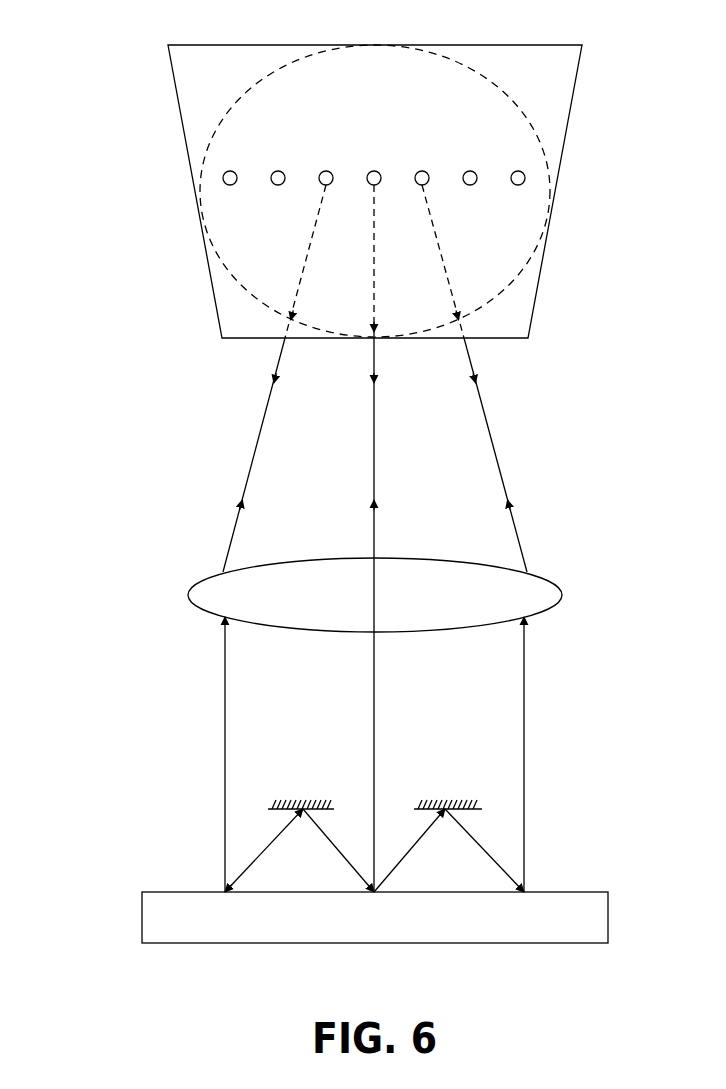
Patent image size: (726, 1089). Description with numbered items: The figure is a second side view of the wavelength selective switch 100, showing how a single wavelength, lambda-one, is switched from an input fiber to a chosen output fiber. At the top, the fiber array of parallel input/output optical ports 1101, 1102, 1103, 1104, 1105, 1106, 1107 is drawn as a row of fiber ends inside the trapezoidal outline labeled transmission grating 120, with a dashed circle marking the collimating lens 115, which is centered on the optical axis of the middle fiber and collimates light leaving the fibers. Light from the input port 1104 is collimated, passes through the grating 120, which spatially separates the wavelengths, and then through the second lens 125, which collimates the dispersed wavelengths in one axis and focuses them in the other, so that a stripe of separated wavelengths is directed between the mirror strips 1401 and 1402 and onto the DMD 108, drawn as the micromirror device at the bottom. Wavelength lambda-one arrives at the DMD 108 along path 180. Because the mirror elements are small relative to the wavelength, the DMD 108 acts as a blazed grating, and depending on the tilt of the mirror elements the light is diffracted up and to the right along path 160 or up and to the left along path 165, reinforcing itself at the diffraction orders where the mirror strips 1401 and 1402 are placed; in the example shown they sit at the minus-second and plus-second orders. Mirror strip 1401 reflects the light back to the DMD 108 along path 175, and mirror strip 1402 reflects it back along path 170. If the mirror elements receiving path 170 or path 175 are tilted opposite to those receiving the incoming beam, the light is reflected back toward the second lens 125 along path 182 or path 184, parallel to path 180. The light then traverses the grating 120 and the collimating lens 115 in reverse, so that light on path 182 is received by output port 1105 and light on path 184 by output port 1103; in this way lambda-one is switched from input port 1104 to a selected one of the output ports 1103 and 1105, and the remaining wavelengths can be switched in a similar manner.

The wavelength selective switch 100 is at (99, 462).
The DMD 108 is at (142, 912).
The input/output optical port 1101 is at (223, 178).
The input/output optical port 1102 is at (278, 170).
The output port 1103 is at (325, 186).
The input port 1104 is at (373, 170).
The output port 1105 is at (423, 186).
The input/output optical port 1106 is at (468, 170).
The input/output optical port 1107 is at (525, 178).
The collimating lens 115 is at (243, 288).
The transmission grating 120 is at (193, 80).
The second lens 125 is at (188, 593).
The mirror strip 1401 is at (286, 800).
The mirror strip 1402 is at (437, 800).
The path 160 is at (420, 845).
The path 165 is at (325, 838).
The path 170 is at (498, 845).
The path 175 is at (253, 860).
The path 180 is at (374, 712).
The path 182 is at (524, 712).
The path 184 is at (225, 712).